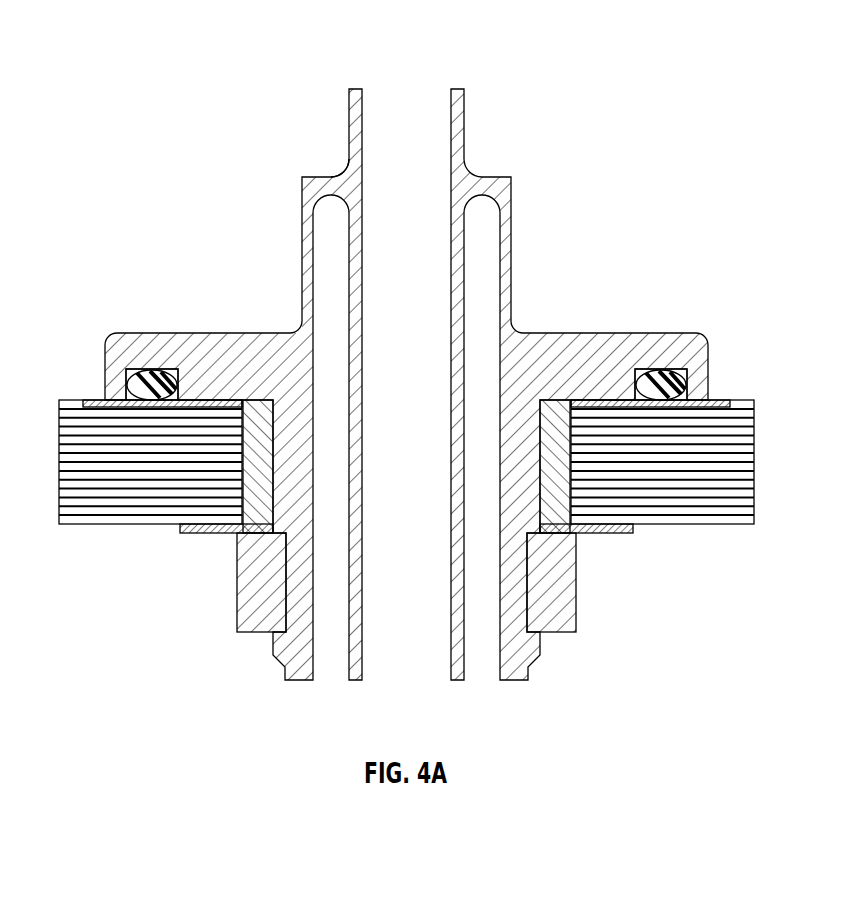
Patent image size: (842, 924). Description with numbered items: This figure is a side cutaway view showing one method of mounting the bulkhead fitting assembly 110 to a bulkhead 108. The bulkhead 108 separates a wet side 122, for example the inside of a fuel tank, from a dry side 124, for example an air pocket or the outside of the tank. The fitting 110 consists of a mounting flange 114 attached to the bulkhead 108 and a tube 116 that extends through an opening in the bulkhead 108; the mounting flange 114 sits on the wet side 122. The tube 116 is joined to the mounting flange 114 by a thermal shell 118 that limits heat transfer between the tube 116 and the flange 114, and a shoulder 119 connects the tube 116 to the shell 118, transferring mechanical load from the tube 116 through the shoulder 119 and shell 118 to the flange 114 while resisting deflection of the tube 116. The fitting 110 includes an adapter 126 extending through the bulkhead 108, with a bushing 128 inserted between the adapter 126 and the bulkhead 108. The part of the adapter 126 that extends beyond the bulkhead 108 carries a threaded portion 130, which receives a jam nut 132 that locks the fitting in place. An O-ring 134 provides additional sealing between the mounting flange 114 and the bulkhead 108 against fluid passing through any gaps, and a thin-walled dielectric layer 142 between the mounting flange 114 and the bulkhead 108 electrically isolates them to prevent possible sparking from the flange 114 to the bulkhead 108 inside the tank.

The bulkhead fitting assembly 110 is at (204, 34).
The bulkhead 108 is at (89, 526).
The mounting flange 114 is at (180, 333).
The tube 116 is at (452, 474).
The thermal shell 118 is at (302, 232).
The shoulder 119 is at (330, 178).
The wet side 122 is at (625, 282).
The dry side 124 is at (713, 622).
The adapter 126 is at (512, 449).
The bushing 128 is at (608, 537).
The threaded portion 130 is at (532, 580).
The jam nut 132 is at (236, 581).
The O-ring 134 is at (690, 388).
The thin-walled dielectric layer 142 is at (92, 399).